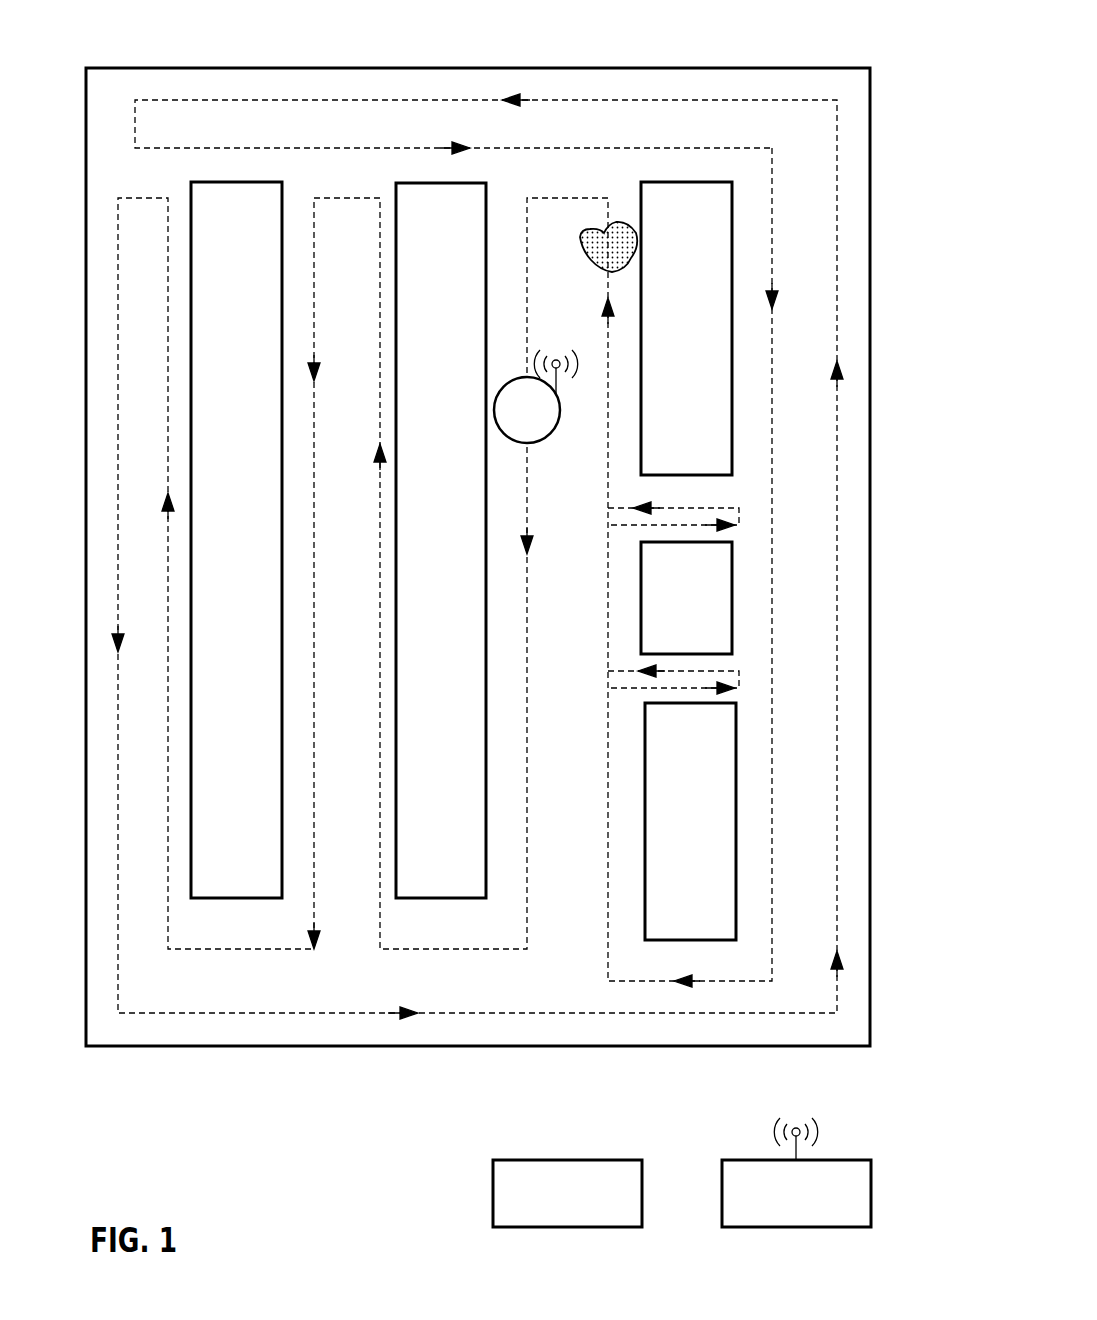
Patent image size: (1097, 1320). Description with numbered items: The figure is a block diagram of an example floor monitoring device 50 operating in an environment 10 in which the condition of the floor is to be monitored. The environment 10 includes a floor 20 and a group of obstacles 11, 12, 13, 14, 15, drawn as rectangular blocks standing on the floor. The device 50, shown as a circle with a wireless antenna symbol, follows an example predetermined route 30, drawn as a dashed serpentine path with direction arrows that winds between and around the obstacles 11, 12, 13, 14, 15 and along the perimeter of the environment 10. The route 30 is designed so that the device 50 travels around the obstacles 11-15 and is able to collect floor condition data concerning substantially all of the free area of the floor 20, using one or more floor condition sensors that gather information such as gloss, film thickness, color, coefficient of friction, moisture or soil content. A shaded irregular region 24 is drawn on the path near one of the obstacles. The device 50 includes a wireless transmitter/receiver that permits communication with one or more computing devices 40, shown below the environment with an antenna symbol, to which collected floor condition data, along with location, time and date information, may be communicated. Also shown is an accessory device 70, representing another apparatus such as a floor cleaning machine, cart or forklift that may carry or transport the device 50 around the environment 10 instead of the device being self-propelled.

The environment 10 is at (752, 68).
The floor 20 is at (852, 177).
The predetermined route 30 is at (837, 272).
The obstacle 11 is at (225, 551).
The obstacle 12 is at (430, 551).
The obstacle 13 is at (675, 341).
The obstacle 14 is at (675, 609).
The obstacle 15 is at (678, 831).
The spill / obstacle 24 is at (590, 250).
The floor monitoring device 50 is at (515, 421).
The accessory device 70 is at (555, 1204).
The computing device 40 is at (785, 1204).